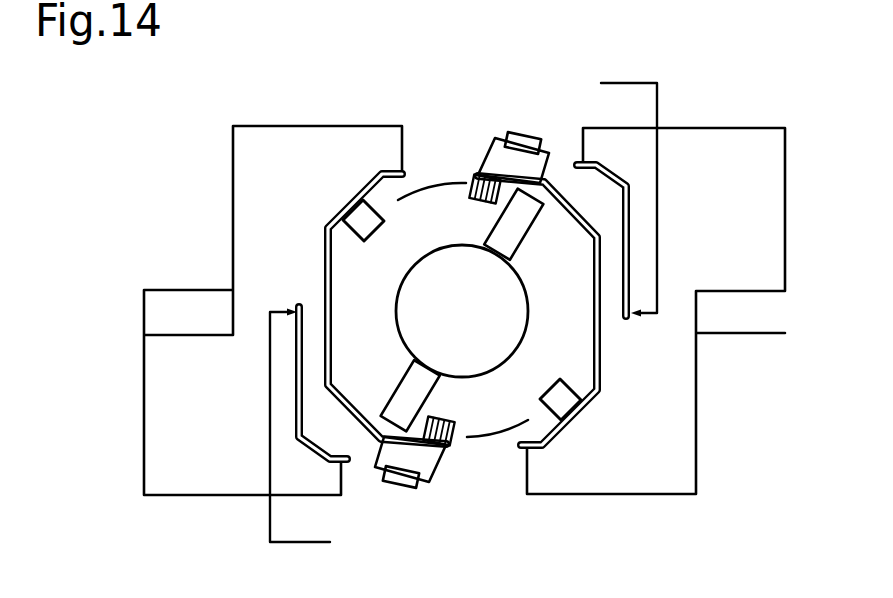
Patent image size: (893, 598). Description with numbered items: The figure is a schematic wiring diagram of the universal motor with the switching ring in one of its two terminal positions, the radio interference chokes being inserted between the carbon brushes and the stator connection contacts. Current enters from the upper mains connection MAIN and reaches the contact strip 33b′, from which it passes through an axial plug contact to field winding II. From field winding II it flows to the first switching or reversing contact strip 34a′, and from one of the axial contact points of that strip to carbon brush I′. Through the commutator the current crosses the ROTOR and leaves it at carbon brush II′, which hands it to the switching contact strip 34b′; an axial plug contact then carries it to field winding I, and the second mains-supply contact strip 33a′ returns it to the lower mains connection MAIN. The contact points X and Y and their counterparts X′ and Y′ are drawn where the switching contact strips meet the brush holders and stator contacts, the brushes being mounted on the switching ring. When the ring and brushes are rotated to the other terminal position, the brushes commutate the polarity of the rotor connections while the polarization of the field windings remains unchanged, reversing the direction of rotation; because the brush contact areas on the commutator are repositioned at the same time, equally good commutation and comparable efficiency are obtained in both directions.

The rotor ROTOR is at (462, 311).
The field winding I is at (144, 322).
The field winding II is at (786, 311).
The mains connection MAIN is at (601, 83).
The second mains-supply contact strip 33a′ is at (297, 398).
The contact strip 33b′ is at (628, 245).
The first switching (reversing) contact strip 34a′ is at (603, 335).
The switching contact strip 34b′ is at (325, 283).
The contact X is at (368, 222).
The brush Y is at (481, 174).
The brush X′ is at (443, 452).
The contact Y′ is at (563, 404).
The carbon brush I′ is at (520, 238).
The carbon brush II′ is at (435, 395).